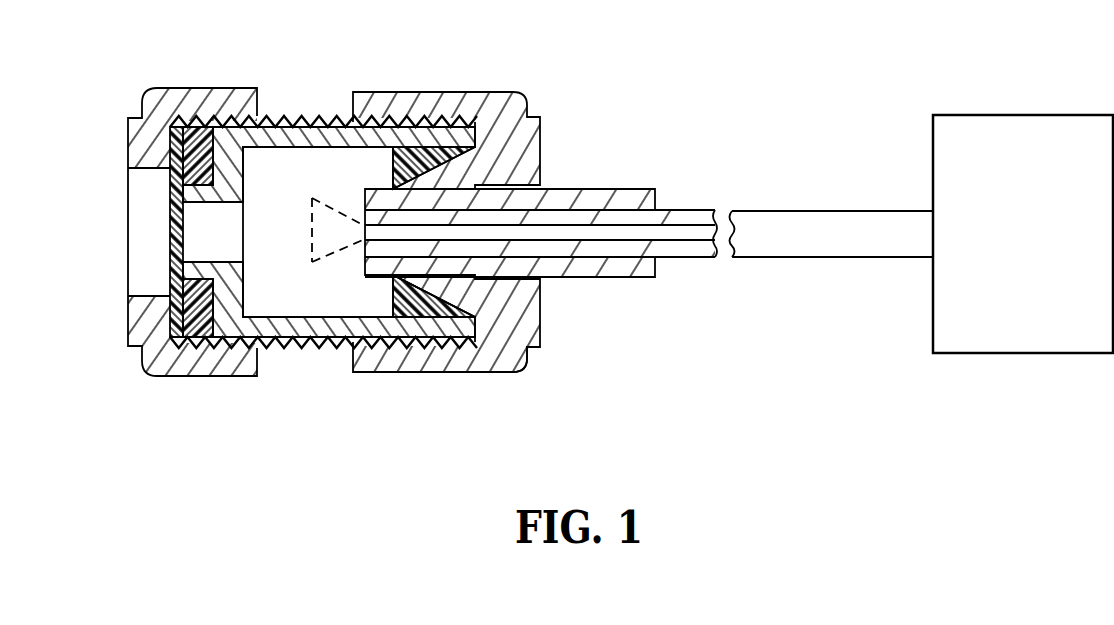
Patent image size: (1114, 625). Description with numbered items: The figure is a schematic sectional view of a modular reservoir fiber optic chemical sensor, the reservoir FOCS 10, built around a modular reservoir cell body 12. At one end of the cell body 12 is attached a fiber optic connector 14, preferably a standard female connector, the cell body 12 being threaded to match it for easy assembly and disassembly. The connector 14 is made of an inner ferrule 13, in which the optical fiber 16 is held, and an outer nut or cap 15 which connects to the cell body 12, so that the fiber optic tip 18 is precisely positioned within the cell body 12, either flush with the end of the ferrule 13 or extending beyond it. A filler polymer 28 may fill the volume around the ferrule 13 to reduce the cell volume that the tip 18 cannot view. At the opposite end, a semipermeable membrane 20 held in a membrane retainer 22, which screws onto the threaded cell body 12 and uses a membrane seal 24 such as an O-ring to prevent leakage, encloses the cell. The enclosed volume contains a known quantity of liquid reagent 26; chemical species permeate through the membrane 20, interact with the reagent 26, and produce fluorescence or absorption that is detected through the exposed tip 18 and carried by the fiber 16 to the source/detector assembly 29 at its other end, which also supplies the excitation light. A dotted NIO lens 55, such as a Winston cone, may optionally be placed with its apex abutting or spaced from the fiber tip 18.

The reservoir FOCS 10 is at (652, 55).
The modular reservoir cell body 12 is at (302, 258).
The inner ferrule 13 is at (431, 348).
The fiber optic connector 14 is at (394, 68).
The outer nut or cap 15 is at (555, 385).
The optical fiber 16 is at (649, 211).
The fiber optic tip 18 is at (338, 254).
The semipermeable membrane 20 is at (122, 232).
The membrane retainer 22 is at (113, 205).
The membrane seal 24 is at (137, 232).
The liquid reagent 26 is at (318, 186).
The filler polymer 28 is at (400, 234).
The source/detector assembly 29 is at (1037, 287).
The NIO lens 55 is at (290, 211).